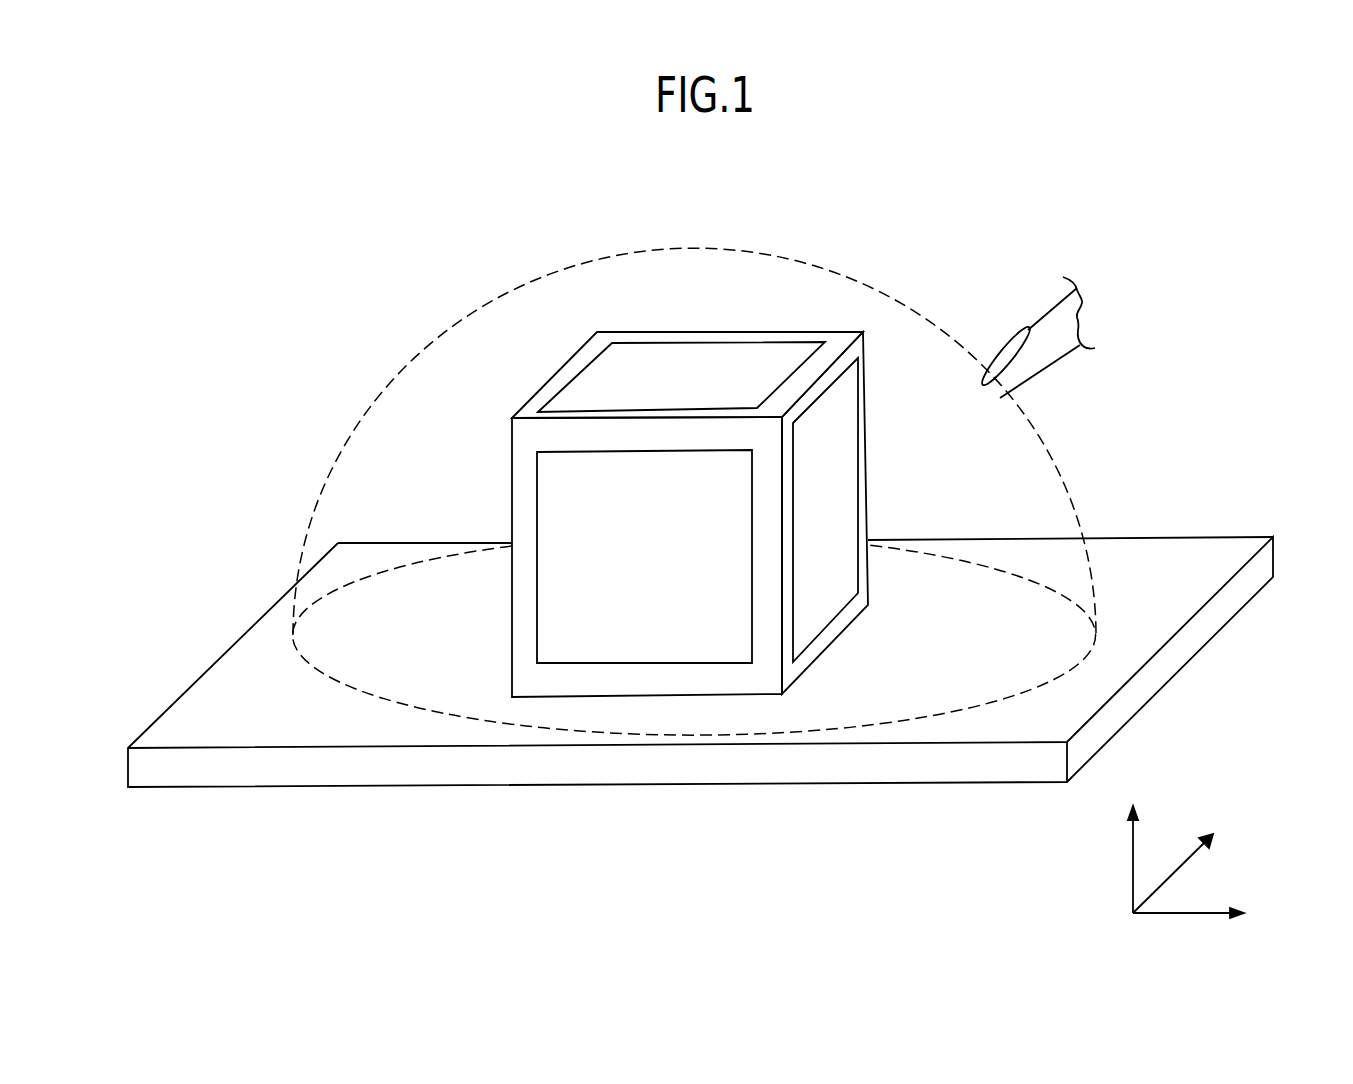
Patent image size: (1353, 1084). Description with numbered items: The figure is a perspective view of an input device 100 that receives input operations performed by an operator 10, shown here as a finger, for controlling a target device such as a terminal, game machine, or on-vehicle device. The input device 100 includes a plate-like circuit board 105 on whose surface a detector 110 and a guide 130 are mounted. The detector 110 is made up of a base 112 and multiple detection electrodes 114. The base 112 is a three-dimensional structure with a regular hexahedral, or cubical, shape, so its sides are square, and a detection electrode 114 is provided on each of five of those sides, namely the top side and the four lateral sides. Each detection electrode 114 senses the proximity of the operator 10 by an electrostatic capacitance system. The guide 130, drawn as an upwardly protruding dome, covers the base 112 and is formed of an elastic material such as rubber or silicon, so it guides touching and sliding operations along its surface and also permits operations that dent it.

The input device 100 is at (1270, 253).
The circuit board 105 is at (998, 767).
The detector 110 is at (695, 479).
The base 112 is at (542, 385).
The detection electrode 114 is at (697, 357).
The guide 130 is at (1042, 440).
The operator 10 is at (1042, 313).